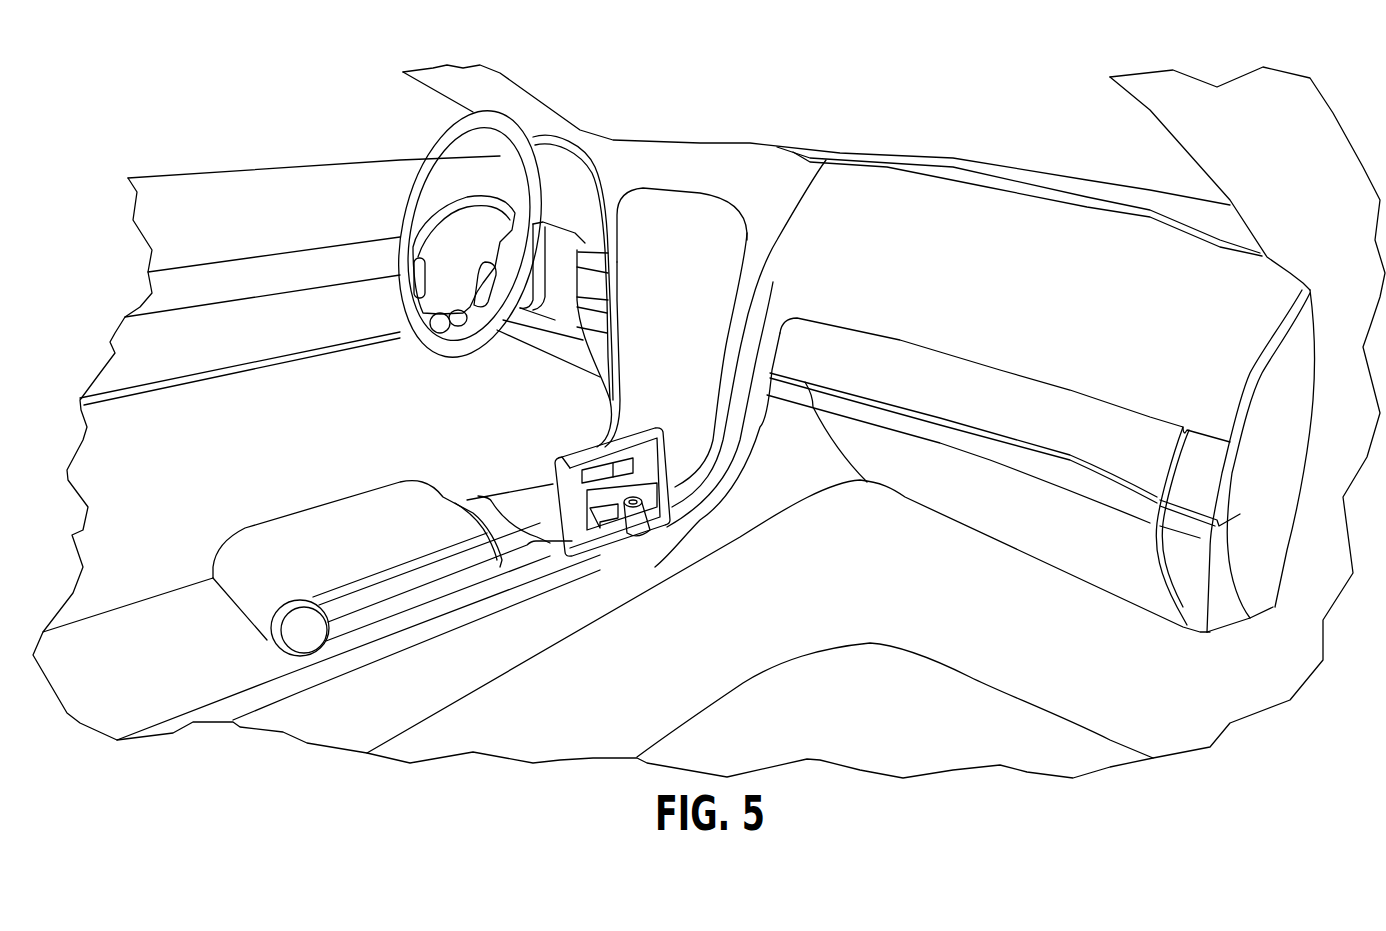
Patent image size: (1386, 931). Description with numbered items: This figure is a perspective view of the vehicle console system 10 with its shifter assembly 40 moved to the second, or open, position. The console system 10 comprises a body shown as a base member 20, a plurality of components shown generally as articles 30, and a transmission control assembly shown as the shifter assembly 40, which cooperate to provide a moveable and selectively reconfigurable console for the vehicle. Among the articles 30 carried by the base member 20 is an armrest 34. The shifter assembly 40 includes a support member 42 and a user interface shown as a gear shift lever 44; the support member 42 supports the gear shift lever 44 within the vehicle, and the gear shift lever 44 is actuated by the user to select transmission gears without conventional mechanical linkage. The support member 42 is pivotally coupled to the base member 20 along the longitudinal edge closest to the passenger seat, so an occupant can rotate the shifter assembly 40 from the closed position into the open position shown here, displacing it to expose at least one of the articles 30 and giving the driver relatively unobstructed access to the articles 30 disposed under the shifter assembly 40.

The console system 10 is at (282, 435).
The base member 20 is at (755, 493).
The articles 30 is at (542, 487).
The armrest 34 is at (255, 540).
The shifter assembly 40 is at (603, 613).
The support member 42 is at (528, 548).
The gear shift lever 44 is at (648, 536).